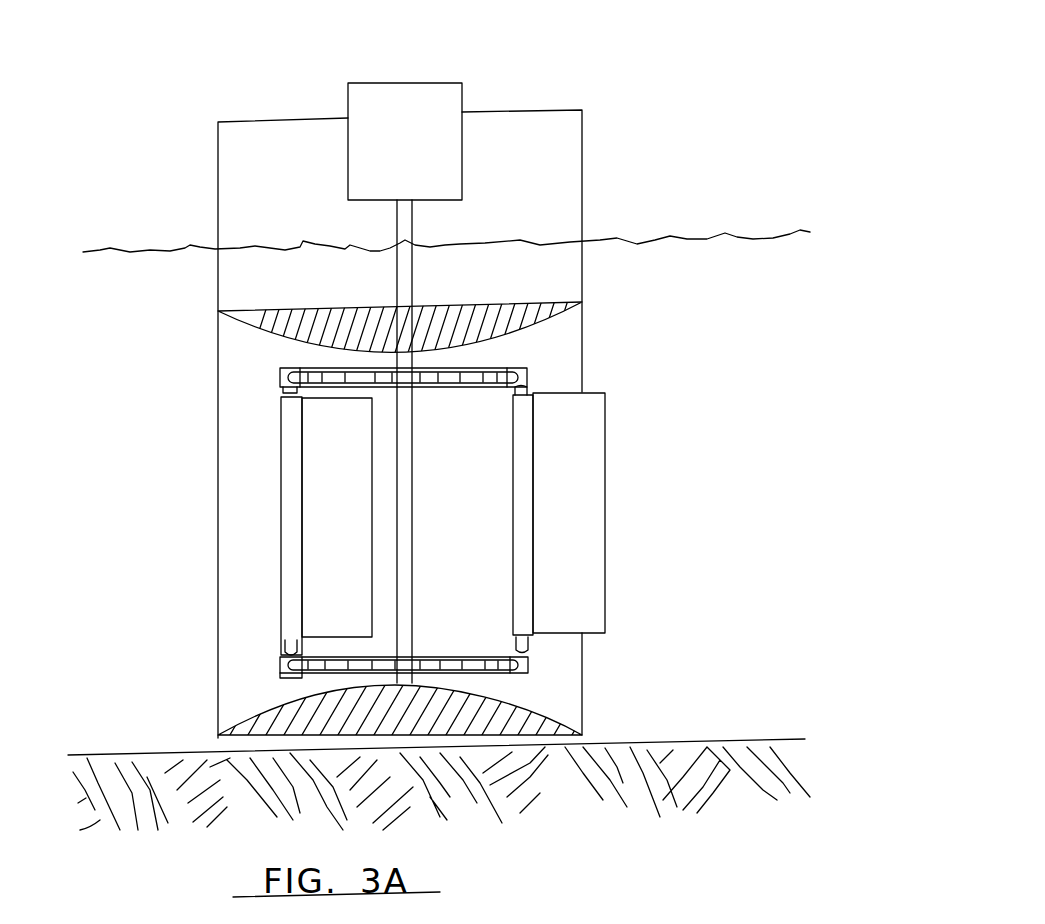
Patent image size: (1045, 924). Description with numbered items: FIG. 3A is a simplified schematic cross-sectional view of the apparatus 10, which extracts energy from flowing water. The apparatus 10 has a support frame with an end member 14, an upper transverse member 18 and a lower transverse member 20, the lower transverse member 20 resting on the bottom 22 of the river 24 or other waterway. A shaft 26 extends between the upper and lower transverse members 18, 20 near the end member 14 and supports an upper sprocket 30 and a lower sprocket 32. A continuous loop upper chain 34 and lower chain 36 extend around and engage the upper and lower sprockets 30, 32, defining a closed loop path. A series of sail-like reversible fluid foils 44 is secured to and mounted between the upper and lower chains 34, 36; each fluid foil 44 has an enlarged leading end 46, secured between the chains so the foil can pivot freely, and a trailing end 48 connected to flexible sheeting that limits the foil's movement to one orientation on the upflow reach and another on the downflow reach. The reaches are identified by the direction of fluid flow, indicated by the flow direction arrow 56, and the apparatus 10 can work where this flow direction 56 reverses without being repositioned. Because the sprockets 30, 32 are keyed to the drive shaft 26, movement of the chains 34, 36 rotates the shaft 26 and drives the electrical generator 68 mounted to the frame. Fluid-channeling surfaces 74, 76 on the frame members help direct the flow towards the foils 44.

The apparatus 10 is at (552, 90).
The end member 14 is at (523, 203).
The upper transverse member 18 is at (537, 297).
The lower transverse member 20 is at (548, 716).
The bottom 22 is at (633, 742).
The river 24 is at (798, 426).
The shaft 26 is at (393, 270).
The upper sprocket 30 is at (483, 362).
The lower sprocket 32 is at (338, 657).
The upper chain 34 is at (527, 370).
The lower chain 36 is at (528, 660).
The fluid foil 44 is at (315, 457).
The leading end 46 is at (283, 582).
The trailing end 48 is at (605, 533).
The flow direction arrow 56 is at (185, 505).
The electrical generator 68 is at (385, 120).
The fluid-channeling surface 74 is at (260, 328).
The fluid-channeling surface 76 is at (282, 710).